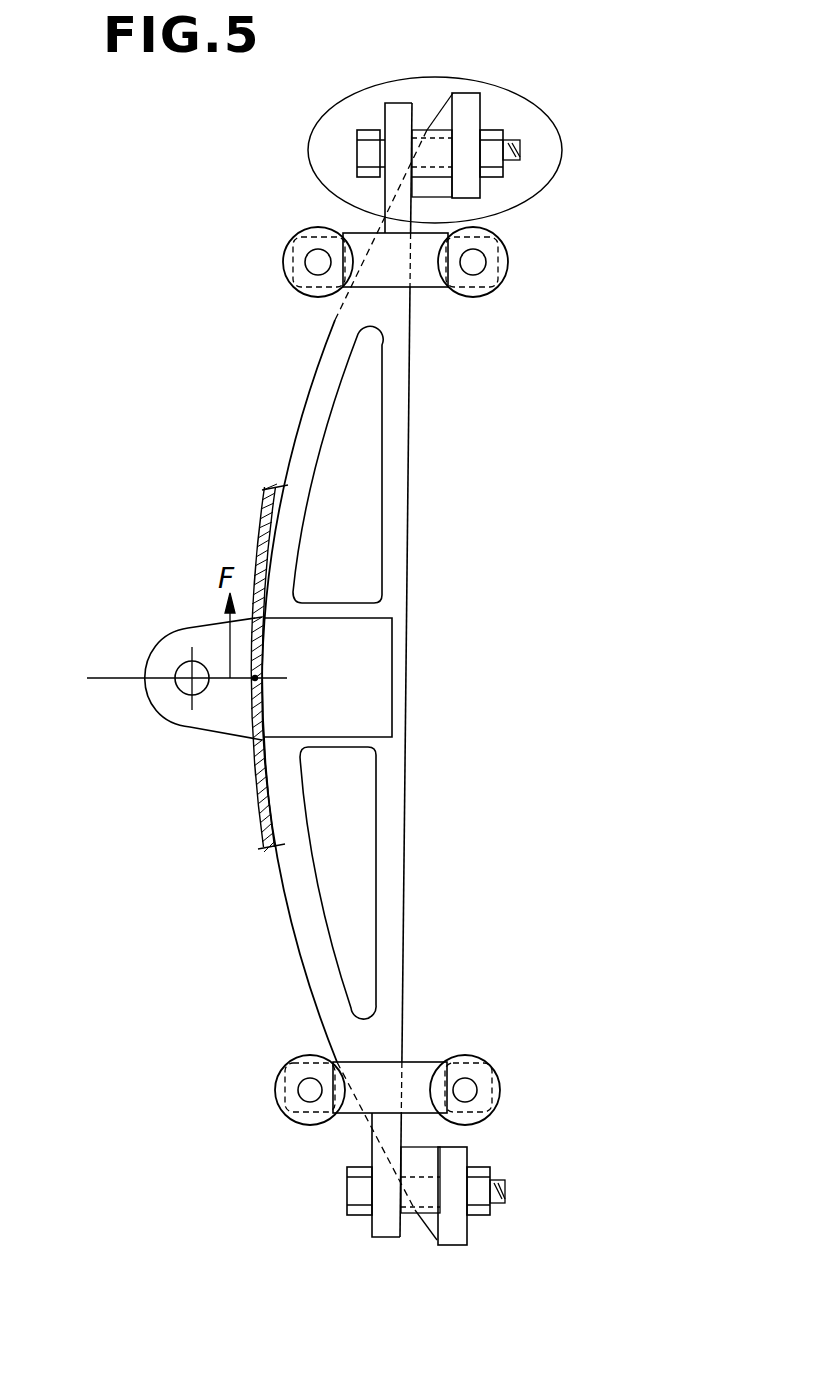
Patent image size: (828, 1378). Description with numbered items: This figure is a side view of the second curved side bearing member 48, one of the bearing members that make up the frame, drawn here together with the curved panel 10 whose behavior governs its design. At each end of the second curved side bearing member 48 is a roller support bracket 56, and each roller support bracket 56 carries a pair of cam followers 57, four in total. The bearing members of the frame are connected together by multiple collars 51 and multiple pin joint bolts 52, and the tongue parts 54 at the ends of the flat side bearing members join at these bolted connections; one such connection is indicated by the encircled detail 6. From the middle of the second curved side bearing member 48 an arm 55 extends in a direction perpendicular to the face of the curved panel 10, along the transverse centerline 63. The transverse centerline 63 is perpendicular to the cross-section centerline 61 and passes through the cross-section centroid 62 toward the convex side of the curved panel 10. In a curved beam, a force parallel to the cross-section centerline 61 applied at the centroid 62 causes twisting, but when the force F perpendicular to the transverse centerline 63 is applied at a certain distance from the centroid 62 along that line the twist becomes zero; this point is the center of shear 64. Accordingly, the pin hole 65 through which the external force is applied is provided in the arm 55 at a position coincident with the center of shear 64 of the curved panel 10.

The bolt fastening portion 6 is at (559, 167).
The curved panel 10 is at (258, 568).
The second curved side bearing member 48 is at (398, 600).
The collar 51 is at (427, 128).
The pin joint bolt 52 is at (357, 150).
The tongue part 54 is at (466, 93).
The arm 55 is at (360, 680).
The roller support bracket 56 is at (430, 277).
The cam follower 57 is at (286, 268).
The cross-section centerline 61 is at (256, 790).
The cross-section centroid 62 is at (254, 680).
The transverse centerline 63 is at (113, 678).
The center of shear 64 is at (192, 670).
The pin hole 65 is at (182, 692).